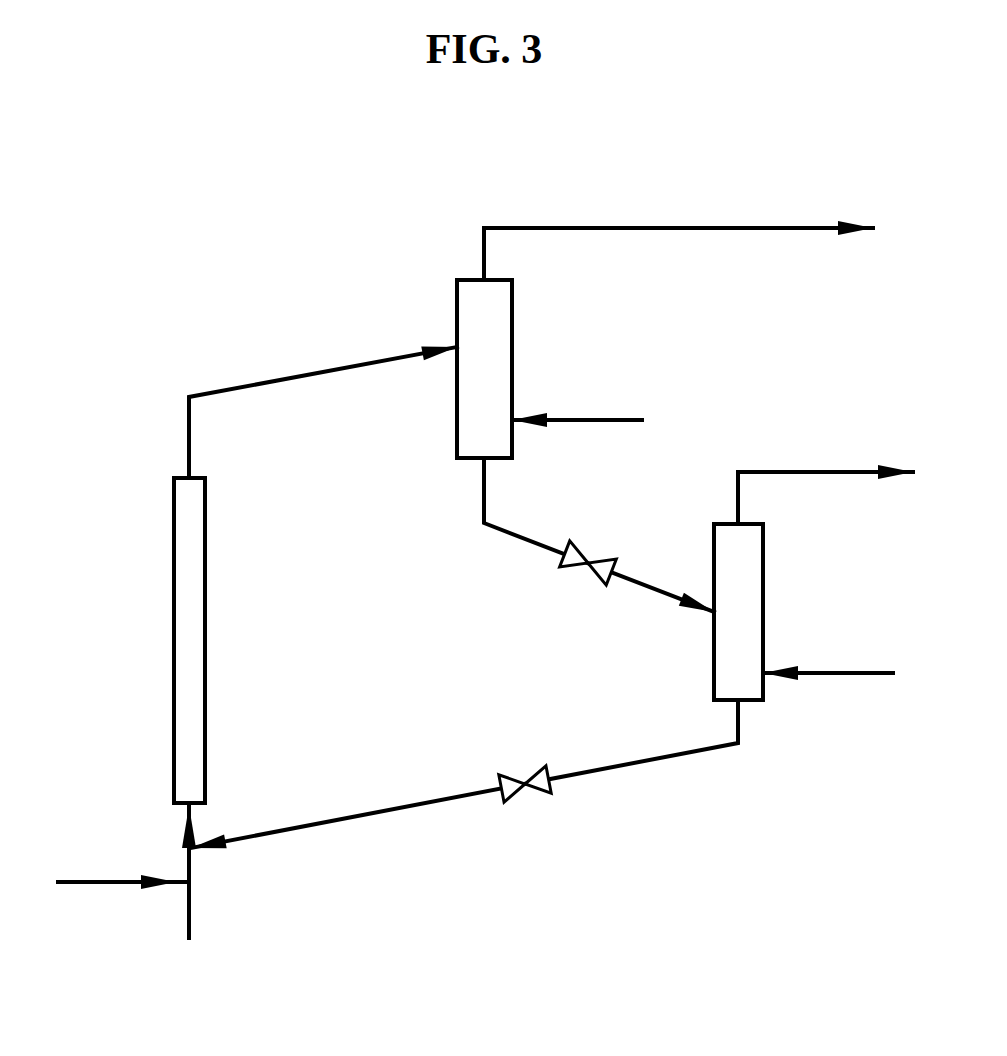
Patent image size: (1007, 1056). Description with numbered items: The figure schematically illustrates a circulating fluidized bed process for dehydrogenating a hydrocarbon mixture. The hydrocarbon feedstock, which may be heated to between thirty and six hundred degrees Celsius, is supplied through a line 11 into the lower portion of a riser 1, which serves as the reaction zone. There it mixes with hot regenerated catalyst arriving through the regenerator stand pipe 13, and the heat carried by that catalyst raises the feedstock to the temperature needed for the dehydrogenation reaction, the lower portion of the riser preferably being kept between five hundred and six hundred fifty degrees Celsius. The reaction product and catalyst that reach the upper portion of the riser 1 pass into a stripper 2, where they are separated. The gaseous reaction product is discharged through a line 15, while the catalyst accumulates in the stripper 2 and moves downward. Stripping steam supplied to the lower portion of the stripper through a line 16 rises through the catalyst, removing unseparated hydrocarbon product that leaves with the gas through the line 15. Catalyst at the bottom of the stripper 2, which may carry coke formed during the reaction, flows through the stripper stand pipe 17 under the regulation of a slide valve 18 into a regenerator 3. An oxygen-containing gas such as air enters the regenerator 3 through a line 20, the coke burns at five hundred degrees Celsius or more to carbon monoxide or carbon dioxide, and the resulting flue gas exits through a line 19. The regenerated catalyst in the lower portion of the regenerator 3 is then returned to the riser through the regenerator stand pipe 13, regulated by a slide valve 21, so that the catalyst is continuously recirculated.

The riser 1 is at (160, 585).
The stripper 2 is at (440, 307).
The regenerator 3 is at (782, 594).
The line 11 is at (127, 870).
The regenerator stand pipe 13 is at (464, 777).
The line 15 is at (678, 234).
The line 16 is at (577, 405).
The stripper stand pipe 17 is at (592, 538).
The slide valve 18 is at (603, 540).
The line 19 is at (825, 480).
The line 20 is at (828, 658).
The slide valve 21 is at (536, 808).